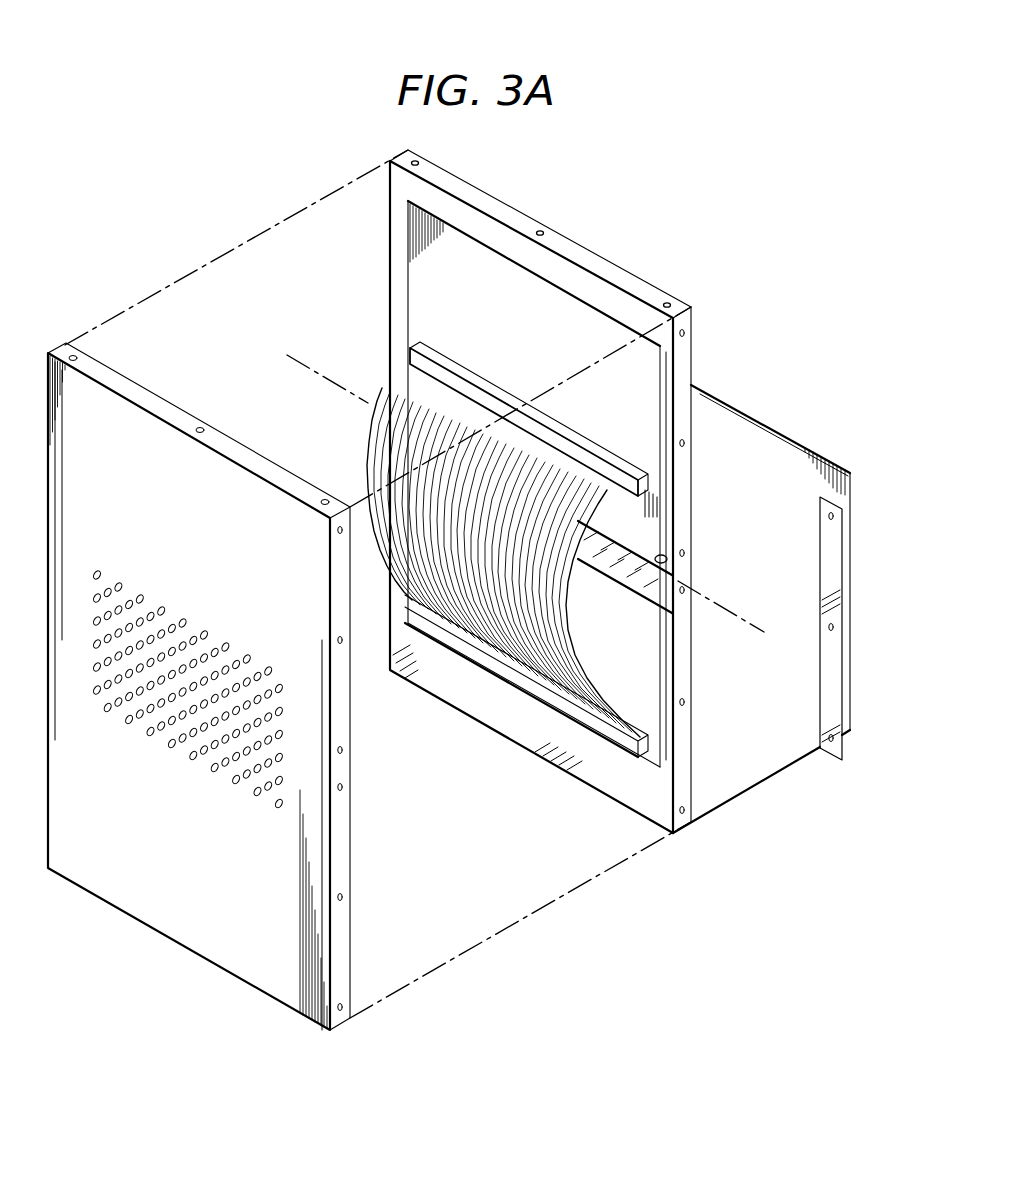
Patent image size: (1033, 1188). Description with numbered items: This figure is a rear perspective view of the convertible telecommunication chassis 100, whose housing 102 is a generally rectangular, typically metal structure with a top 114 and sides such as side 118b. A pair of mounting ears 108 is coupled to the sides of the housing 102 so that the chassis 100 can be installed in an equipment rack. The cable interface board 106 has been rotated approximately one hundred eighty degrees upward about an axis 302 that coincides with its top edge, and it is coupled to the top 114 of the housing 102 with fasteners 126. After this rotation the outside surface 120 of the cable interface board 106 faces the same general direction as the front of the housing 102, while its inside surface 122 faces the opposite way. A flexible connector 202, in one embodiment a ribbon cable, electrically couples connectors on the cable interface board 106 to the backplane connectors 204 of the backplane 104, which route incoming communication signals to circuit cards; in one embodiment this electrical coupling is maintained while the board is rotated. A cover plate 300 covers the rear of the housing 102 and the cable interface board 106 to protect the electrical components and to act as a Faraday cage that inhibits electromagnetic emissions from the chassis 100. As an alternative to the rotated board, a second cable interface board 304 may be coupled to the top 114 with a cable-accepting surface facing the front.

The chassis 100 is at (652, 476).
The housing 102 is at (848, 473).
The backplane 104 is at (646, 655).
The cable interface board 106 is at (693, 310).
The mounting ears 108 is at (830, 670).
The top 114 is at (752, 474).
The side 118b is at (773, 745).
The outside surface 120 is at (517, 217).
The inside surface 122 is at (440, 198).
The fasteners 126 is at (664, 556).
The flexible connector 202 is at (367, 457).
The backplane connectors 204 is at (493, 662).
The cover plate 300 is at (173, 923).
The axis 302 is at (307, 362).
The second cable interface board 304 is at (582, 457).